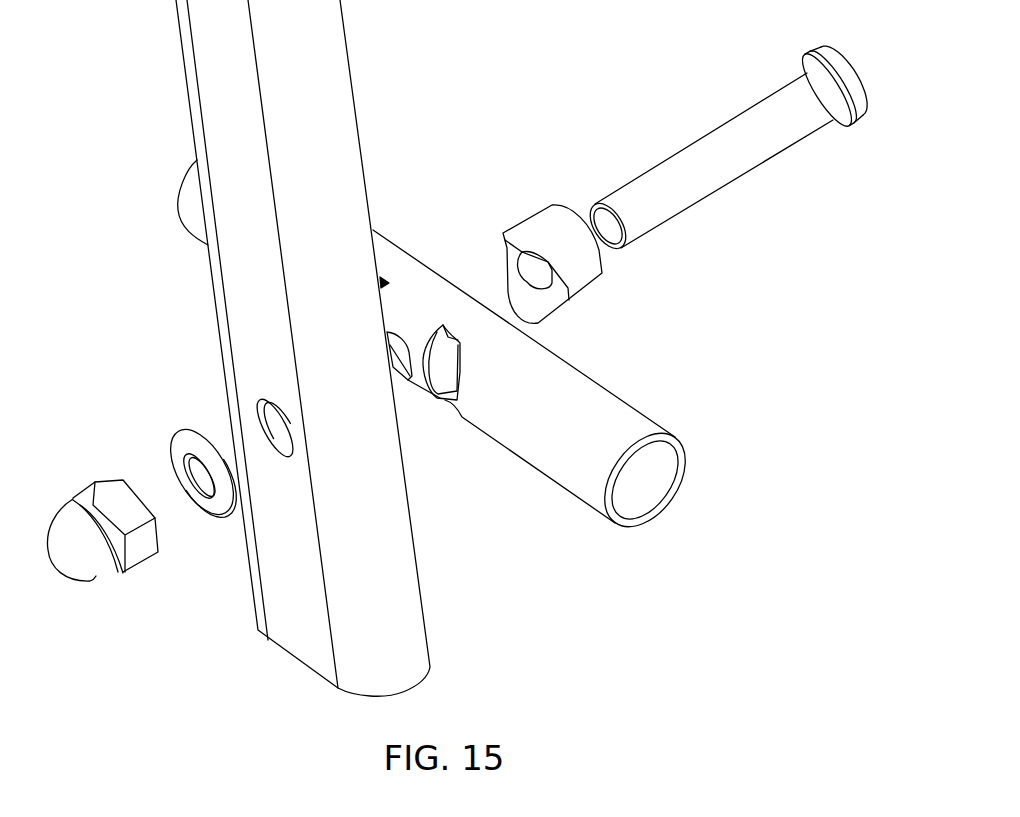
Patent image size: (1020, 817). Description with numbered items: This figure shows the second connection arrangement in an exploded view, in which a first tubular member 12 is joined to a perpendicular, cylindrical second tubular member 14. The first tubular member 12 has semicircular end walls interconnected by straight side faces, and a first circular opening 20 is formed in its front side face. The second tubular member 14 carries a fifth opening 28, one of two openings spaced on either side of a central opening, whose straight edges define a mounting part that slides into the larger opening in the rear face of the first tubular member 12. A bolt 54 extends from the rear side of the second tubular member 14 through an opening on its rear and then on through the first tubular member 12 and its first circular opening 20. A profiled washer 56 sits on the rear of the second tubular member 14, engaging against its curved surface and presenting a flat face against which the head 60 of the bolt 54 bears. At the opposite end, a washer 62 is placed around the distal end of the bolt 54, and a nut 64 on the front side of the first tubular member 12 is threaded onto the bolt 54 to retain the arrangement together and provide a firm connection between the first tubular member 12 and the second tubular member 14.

The first tubular member 12 is at (400, 613).
The second tubular member 14 is at (635, 430).
The first circular opening 20 is at (280, 427).
The fifth opening 28 is at (448, 365).
The bolt 54 is at (717, 158).
The profiled washer 56 is at (578, 277).
The head 60 is at (845, 62).
The washer 62 is at (215, 510).
The nut 64 is at (83, 548).